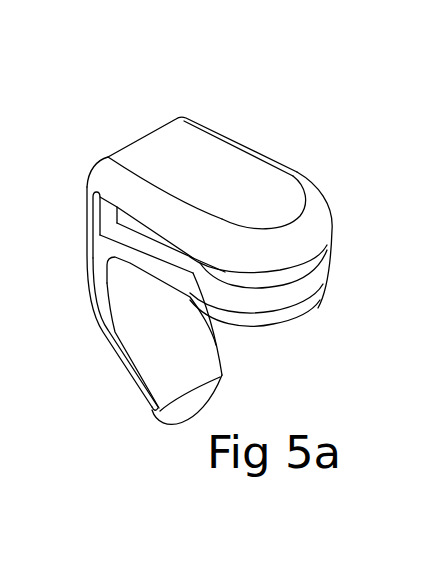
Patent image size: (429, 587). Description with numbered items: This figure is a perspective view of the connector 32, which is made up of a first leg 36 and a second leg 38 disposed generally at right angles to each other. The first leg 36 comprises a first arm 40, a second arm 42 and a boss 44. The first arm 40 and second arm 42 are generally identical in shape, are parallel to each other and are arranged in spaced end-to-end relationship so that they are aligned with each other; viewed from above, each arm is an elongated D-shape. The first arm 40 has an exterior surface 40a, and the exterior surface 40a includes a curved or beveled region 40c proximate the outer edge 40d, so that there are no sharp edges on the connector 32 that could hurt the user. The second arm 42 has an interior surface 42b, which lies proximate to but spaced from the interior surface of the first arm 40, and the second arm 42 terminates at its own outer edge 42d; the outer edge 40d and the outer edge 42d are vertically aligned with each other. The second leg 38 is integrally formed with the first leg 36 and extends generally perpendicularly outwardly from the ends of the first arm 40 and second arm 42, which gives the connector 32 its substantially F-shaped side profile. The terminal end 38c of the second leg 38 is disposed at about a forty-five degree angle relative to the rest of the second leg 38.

The connector 32 is at (271, 96).
The first leg 36 is at (297, 172).
The second leg 38 is at (140, 337).
The terminal end 38c is at (150, 378).
The first arm 40 is at (198, 170).
The exterior surface 40a is at (258, 211).
The curved or beveled region 40c is at (323, 214).
The outer edge 40d is at (123, 223).
The second arm 42 is at (269, 322).
The interior surface 42b is at (190, 263).
The outer edge 42d is at (160, 280).
The boss 44 is at (263, 279).